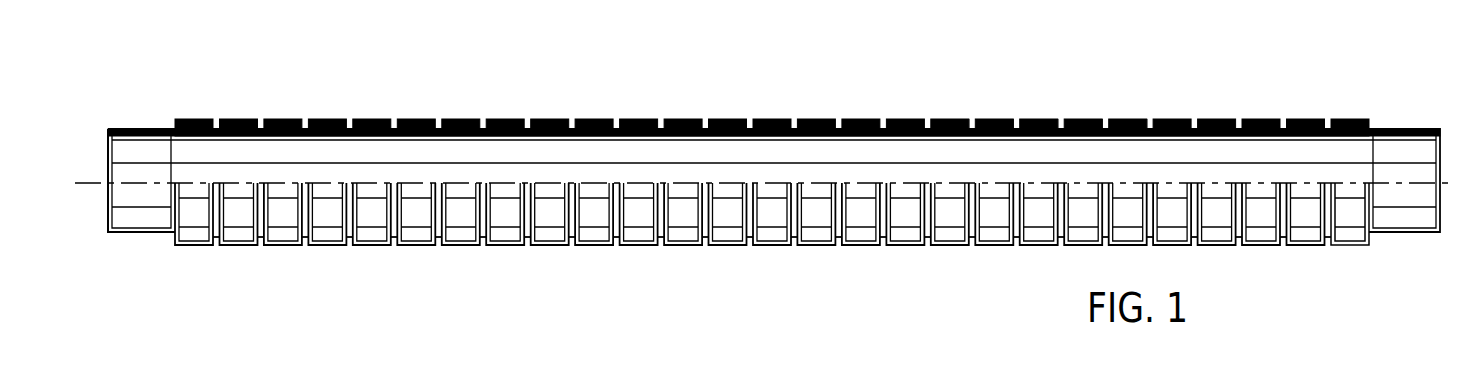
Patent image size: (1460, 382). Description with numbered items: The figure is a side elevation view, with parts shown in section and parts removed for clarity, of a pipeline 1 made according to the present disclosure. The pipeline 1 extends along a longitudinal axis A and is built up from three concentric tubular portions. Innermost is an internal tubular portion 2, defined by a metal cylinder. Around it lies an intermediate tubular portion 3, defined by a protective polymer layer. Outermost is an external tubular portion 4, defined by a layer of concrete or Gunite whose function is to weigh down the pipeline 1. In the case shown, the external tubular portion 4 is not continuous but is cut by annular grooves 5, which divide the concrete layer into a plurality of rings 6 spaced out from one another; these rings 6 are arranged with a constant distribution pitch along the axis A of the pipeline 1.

The pipeline 1 is at (902, 86).
The internal tubular portion 2 is at (160, 129).
The intermediate tubular portion 3 is at (215, 126).
The external tubular portion 4 is at (1210, 99).
The annular grooves 5 is at (968, 112).
The rings 6 is at (815, 210).
The longitudinal axis A is at (1400, 183).